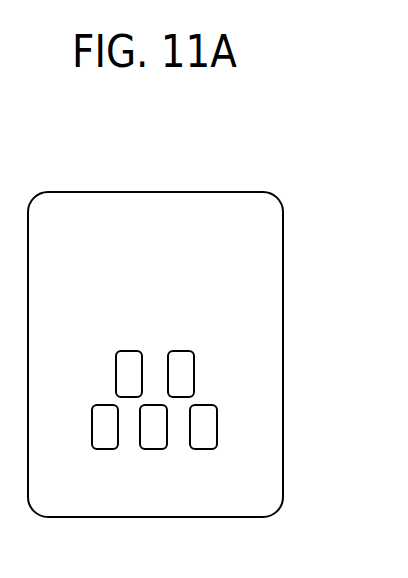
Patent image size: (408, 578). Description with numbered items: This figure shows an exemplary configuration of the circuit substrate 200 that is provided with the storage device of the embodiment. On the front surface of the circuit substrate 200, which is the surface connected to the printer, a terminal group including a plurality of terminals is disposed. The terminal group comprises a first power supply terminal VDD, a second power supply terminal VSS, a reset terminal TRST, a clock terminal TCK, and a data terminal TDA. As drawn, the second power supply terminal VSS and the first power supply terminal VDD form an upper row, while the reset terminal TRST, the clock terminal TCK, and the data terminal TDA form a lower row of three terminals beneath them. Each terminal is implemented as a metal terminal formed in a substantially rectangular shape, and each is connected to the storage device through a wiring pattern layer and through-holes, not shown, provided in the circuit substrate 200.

The circuit substrate 200 is at (180, 192).
The second power supply terminal VSS is at (128, 351).
The first power supply terminal VDD is at (185, 351).
The reset terminal TRST is at (100, 449).
The clock terminal TCK is at (152, 449).
The data terminal TDA is at (202, 449).